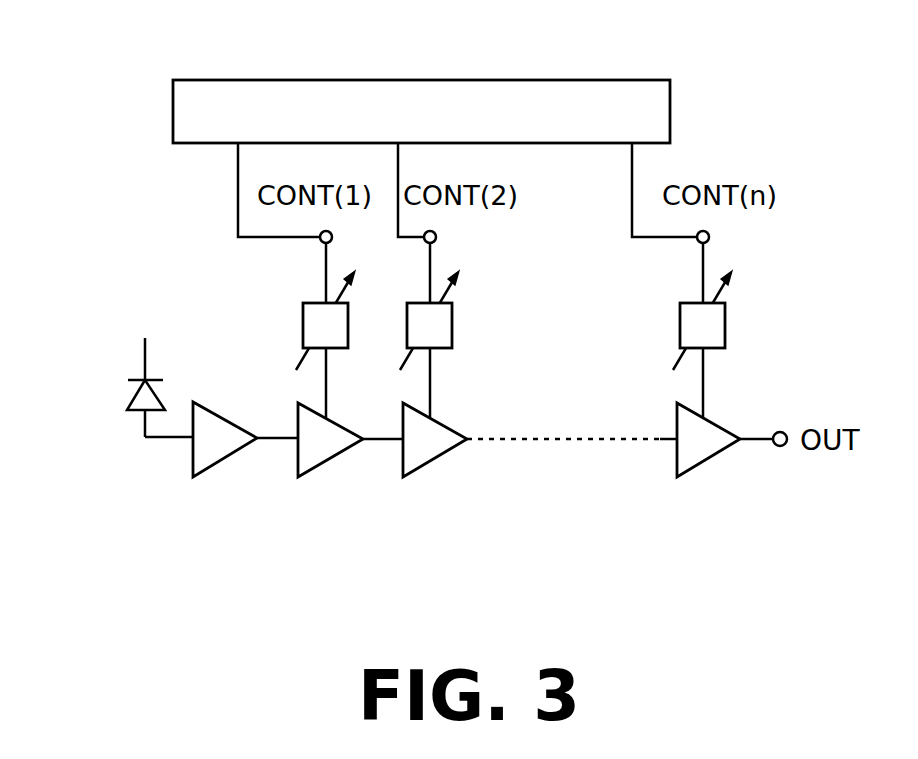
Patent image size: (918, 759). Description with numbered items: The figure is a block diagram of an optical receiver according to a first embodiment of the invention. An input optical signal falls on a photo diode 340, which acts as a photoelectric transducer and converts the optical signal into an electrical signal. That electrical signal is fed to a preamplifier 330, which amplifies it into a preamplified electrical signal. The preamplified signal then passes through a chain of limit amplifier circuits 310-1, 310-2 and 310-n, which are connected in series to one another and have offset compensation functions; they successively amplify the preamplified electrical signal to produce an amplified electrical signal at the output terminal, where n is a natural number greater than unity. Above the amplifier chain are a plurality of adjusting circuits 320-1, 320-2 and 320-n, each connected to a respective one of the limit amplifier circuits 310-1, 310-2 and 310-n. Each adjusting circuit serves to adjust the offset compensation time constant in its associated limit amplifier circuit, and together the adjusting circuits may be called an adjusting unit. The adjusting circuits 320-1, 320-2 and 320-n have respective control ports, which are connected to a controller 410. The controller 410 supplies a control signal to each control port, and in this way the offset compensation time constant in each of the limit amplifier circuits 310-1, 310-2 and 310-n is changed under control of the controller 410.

The controller 410 is at (527, 80).
The adjusting circuit 320-1 is at (303, 313).
The adjusting circuit 320-2 is at (452, 312).
The adjusting circuit 320-n is at (680, 306).
The limit amplifier circuit 310-1 is at (330, 458).
The limit amplifier circuit 310-2 is at (435, 458).
The limit amplifier circuit 310-n is at (707, 459).
The preamplifier 330 is at (222, 462).
The photo diode 340 is at (137, 413).